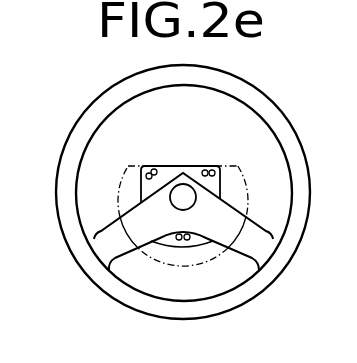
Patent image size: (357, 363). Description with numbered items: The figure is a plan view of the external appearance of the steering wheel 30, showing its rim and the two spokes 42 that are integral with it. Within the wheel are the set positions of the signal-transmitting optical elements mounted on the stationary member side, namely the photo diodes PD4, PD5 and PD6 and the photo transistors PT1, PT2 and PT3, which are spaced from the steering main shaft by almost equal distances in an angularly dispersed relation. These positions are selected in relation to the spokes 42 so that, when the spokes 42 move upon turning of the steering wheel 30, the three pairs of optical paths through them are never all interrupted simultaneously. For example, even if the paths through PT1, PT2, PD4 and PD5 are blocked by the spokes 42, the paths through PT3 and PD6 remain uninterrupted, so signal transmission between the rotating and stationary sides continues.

The steering wheel 30 is at (263, 101).
The spokes 42 is at (110, 252).
The photo diode PD6 is at (153, 168).
The photo transistor PT3 is at (146, 174).
The photo transistor PT2 is at (206, 170).
The photo diode PD5 is at (215, 172).
The photo diode PD4 is at (178, 240).
The photo transistor PT1 is at (188, 240).